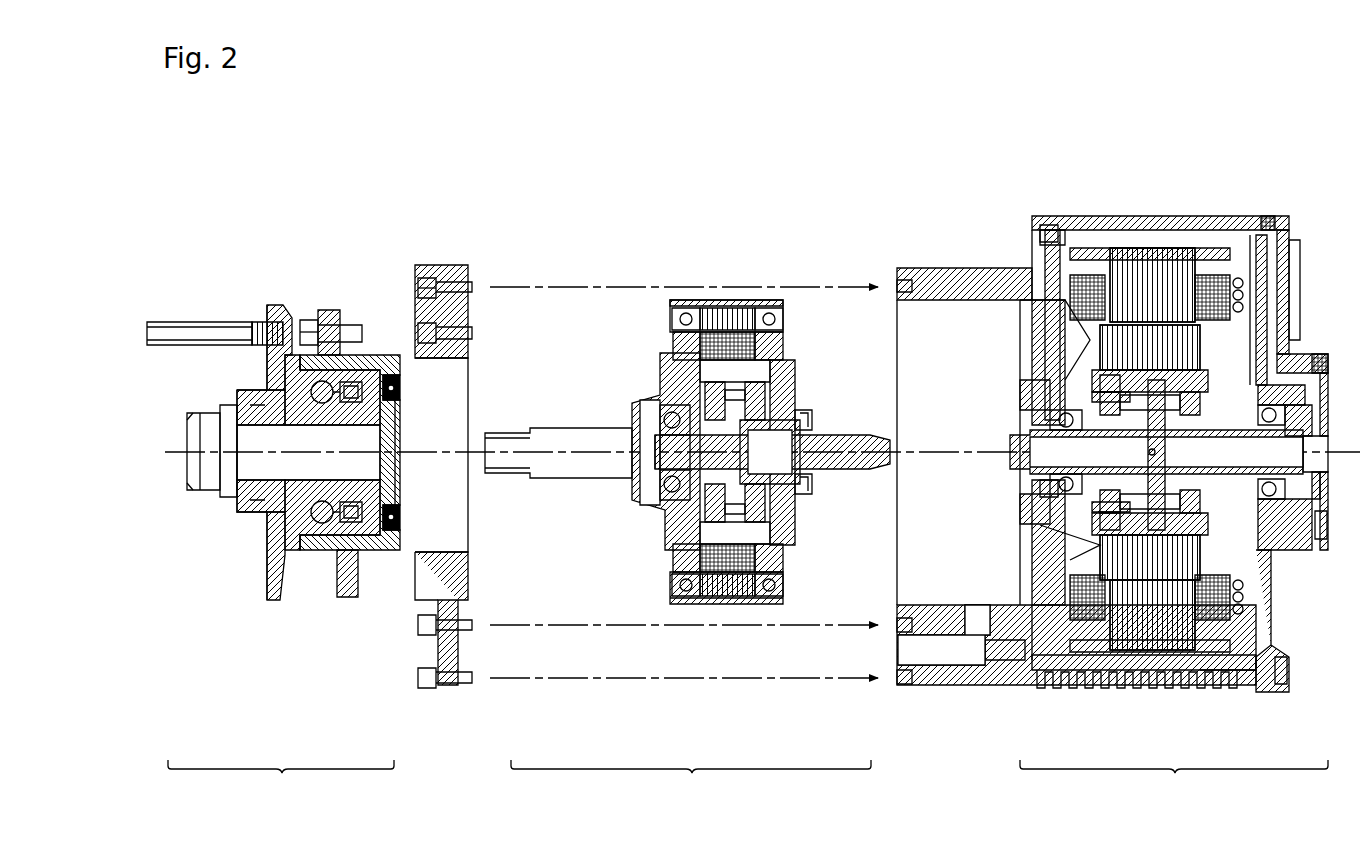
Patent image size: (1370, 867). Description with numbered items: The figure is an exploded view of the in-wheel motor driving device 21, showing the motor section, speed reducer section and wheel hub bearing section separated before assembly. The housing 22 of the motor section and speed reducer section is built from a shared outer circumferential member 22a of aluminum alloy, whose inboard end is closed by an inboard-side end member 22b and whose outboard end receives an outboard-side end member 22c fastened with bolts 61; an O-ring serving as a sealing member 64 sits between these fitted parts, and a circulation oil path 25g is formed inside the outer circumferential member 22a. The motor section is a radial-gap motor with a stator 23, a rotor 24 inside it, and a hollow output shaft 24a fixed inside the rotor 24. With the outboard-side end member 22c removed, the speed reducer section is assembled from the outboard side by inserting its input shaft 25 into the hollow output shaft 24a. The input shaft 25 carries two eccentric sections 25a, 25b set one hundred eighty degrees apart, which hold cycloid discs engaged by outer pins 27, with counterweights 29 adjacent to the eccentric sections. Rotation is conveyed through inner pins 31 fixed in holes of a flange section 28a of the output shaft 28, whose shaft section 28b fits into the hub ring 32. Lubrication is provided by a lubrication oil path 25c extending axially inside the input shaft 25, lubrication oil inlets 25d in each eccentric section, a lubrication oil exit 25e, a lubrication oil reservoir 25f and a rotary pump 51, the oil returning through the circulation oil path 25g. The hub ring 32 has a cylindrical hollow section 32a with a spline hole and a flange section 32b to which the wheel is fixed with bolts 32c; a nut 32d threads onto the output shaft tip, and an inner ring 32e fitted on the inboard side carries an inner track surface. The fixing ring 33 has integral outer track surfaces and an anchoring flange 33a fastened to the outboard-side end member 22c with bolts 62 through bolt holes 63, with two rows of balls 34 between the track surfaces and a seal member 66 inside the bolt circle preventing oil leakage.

The in-wheel motor driving device 21 is at (688, 185).
The motor housing 22 is at (1015, 292).
The outer circumferential member 22a is at (975, 292).
The inboard-side end member 22b is at (1290, 280).
The outboard-side end member 22c is at (470, 580).
The stator 23 is at (1100, 345).
The rotor 24 is at (1045, 300).
The hollow output shaft 24a is at (1240, 412).
The input shaft 25 is at (830, 468).
The eccentric section 25a is at (765, 483).
The eccentric section 25b is at (700, 418).
The lubrication oil path 25c is at (1040, 408).
The lubrication oil inlet 25d is at (672, 517).
The lubrication oil exit 25e is at (975, 615).
The lubrication oil reservoir 25f is at (942, 650).
The circulation oil path 25g is at (1190, 240).
The outer pin 27 is at (735, 585).
The output shaft 28 is at (602, 362).
The flange section 28a is at (650, 420).
The shaft section 28b is at (575, 438).
The counterweight 29 is at (665, 503).
The inner pin 31 is at (735, 530).
The hub ring 32 is at (262, 540).
The cylindrical hollow section 32a is at (300, 442).
The flange section 32b is at (272, 303).
The bolt 32c is at (243, 333).
The nut 32d is at (208, 465).
The inner ring 32e is at (400, 430).
The fixing ring 33 is at (393, 345).
The anchoring flange 33a is at (332, 318).
The balls 34 is at (348, 535).
The rotary pump 51 is at (1025, 385).
The bolt 61 is at (448, 280).
The bolt 62 is at (306, 328).
The bolt hole 63 is at (422, 330).
The sealing member 64 is at (462, 305).
The seal member 66 is at (390, 378).